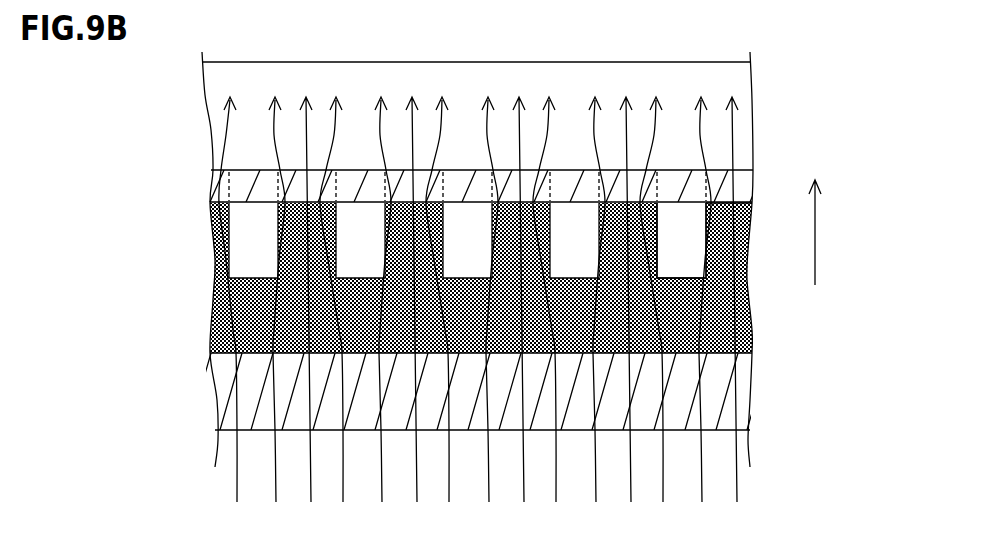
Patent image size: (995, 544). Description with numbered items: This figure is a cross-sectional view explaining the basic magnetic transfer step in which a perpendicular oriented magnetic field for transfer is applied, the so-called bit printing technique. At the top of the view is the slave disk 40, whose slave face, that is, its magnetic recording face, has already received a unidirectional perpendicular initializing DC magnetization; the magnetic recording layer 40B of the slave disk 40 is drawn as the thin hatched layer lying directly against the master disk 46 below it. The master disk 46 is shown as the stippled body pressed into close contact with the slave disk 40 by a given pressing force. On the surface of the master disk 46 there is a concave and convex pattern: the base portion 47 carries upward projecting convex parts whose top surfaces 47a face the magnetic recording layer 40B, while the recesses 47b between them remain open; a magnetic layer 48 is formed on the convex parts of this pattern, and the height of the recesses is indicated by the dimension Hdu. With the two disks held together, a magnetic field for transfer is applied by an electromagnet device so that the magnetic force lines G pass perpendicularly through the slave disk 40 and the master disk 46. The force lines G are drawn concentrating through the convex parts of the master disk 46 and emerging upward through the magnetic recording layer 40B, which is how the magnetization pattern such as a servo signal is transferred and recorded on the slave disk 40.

The slave disk 40 is at (213, 111).
The magnetic recording layer 40B is at (210, 177).
The master disk 46 is at (413, 316).
The base portion of main pole 47 is at (443, 391).
The top surface of protrusion 47a is at (743, 228).
The recess 47b is at (697, 237).
The magnetic layer 48 is at (205, 231).
The magnetic force line G is at (278, 130).
The recess depth Hdu is at (846, 232).